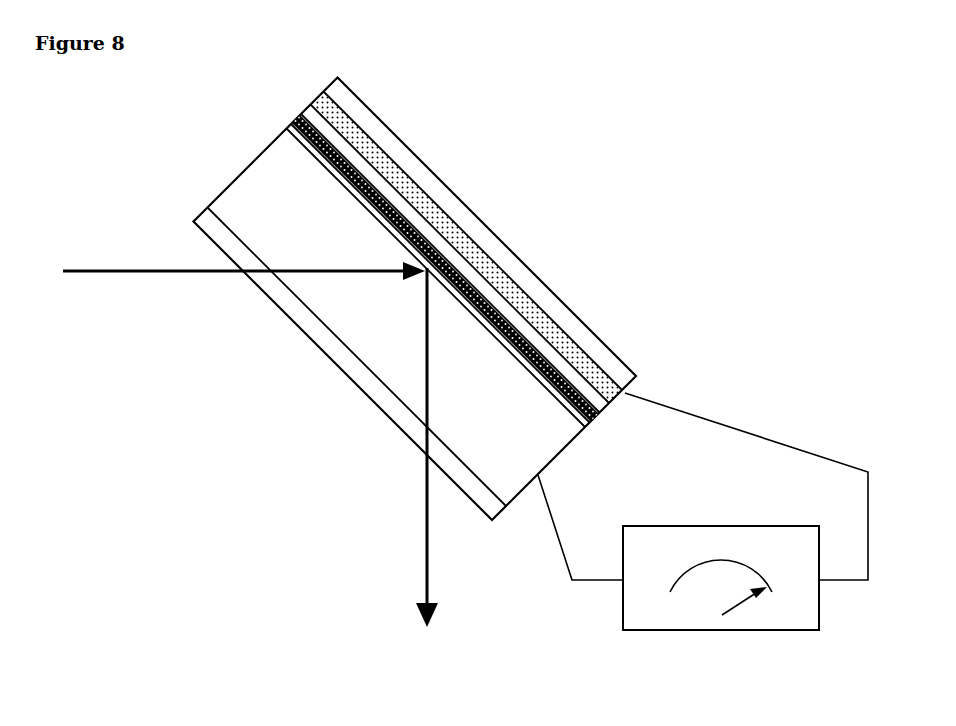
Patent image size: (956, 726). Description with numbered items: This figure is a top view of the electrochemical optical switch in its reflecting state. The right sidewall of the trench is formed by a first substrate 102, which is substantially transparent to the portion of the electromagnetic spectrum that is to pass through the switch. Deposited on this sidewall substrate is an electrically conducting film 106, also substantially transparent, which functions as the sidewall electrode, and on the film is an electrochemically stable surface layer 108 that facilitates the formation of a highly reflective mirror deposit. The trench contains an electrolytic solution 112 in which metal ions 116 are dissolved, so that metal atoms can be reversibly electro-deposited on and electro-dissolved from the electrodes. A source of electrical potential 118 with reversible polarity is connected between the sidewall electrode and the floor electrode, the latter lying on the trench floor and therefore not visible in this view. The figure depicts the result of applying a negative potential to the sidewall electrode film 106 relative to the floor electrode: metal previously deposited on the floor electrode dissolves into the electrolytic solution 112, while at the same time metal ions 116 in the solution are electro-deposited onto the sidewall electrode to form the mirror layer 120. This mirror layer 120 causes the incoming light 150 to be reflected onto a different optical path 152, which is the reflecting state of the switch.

The first substrate 102 is at (440, 198).
The electrically conducting film 106 is at (322, 93).
The electrochemically stable surface layer 108 is at (305, 112).
The electrolytic solution 112 is at (285, 158).
The metal ions 116 is at (247, 203).
The source of electrical potential 118 is at (652, 618).
The mirror layer 120 is at (318, 125).
The incoming light 150 is at (122, 272).
The different optical path 152 is at (420, 502).